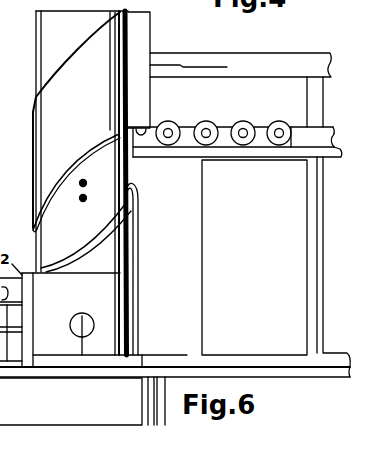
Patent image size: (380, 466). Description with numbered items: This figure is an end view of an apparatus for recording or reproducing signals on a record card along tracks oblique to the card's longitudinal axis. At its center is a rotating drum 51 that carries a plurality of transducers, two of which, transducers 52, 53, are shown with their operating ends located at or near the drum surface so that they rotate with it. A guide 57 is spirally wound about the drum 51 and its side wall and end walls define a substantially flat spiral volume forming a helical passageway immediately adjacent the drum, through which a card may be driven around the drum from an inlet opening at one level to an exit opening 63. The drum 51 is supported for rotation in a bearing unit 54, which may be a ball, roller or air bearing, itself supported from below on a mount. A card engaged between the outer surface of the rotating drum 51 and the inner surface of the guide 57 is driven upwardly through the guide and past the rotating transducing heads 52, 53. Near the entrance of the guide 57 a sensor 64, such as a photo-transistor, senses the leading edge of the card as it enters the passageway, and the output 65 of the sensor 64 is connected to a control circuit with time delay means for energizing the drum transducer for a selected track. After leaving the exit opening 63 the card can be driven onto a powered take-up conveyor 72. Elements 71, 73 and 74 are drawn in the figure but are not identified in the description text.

The drum 51 is at (43, 48).
The transducer 52 is at (80, 203).
The transducer 53 is at (85, 182).
The bearing unit 54 is at (175, 396).
The guide 57 is at (139, 268).
The exit opening 63 is at (140, 32).
The sensor 64 is at (98, 312).
The output of the sensor 65 is at (88, 343).
The rollers 71 is at (222, 150).
The take-up conveyor 72 is at (277, 150).
The frame 73 is at (197, 225).
The guide bar 74 is at (263, 62).